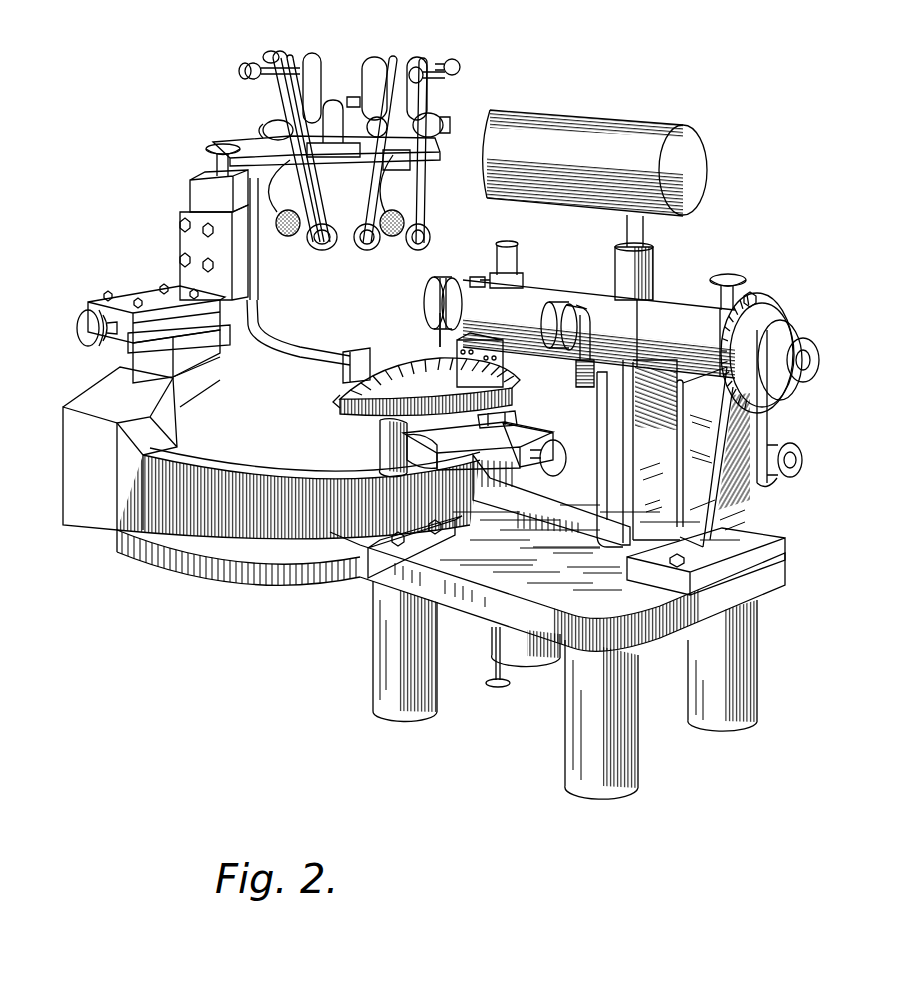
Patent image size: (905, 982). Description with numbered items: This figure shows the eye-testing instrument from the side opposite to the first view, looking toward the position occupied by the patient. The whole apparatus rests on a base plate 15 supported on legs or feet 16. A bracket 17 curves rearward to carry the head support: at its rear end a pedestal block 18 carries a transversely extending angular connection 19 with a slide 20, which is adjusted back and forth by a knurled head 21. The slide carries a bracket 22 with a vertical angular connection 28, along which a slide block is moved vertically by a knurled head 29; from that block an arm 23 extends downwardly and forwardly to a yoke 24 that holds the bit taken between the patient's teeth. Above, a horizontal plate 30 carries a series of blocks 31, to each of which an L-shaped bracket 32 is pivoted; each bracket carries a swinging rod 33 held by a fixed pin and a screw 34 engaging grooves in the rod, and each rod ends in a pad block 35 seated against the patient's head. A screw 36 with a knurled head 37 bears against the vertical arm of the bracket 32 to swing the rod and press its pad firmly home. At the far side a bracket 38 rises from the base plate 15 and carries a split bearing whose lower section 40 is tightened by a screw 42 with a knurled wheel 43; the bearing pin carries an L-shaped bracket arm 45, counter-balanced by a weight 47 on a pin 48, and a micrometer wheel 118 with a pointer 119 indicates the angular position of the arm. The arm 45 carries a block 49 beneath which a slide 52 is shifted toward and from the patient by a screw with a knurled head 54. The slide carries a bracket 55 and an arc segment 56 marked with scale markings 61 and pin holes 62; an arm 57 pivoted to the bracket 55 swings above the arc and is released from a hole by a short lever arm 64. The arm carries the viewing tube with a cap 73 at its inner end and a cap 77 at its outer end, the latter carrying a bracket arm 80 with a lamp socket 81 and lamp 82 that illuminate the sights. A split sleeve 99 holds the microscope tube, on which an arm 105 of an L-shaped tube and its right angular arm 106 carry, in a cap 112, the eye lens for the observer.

The base plate 15 is at (537, 593).
The legs or feet 16 is at (375, 685).
The bracket 17 is at (243, 525).
The pedestal block 18 is at (183, 350).
The angular connection 19 is at (173, 327).
The slide 20 is at (150, 325).
The knurled head 21 is at (87, 337).
The bracket 22 is at (193, 243).
The arm 23 is at (297, 350).
The yoke 24 is at (350, 367).
The vertical angular connection 28 is at (217, 180).
The knurled head 29 is at (213, 147).
The horizontal plate 30 is at (367, 147).
The block 31 is at (347, 70).
The L-shaped bracket 32 is at (307, 53).
The swinging rod 33 is at (280, 87).
The screw 34 is at (273, 130).
The pad block 35 is at (413, 243).
The screw 36 is at (288, 52).
The knurled head 37 is at (243, 68).
The bracket 38 is at (690, 503).
The lower bearing section 40 is at (637, 338).
The tightening screw 42 is at (747, 283).
The knurled wheel 43 is at (723, 273).
The L-shaped bracket arm 45 is at (627, 453).
The weight 47 is at (620, 147).
The pin 48 is at (640, 232).
The block 49 is at (367, 570).
The slide 52 is at (493, 440).
The knurled head 54 is at (557, 453).
The bracket 55 is at (393, 443).
The arc segment 56 is at (350, 403).
The arm 57 is at (413, 420).
The scale markings 61 is at (397, 417).
The pin holes 62 is at (417, 370).
The lever arm 64 is at (497, 307).
The cap 73 is at (440, 293).
The cap 77 is at (570, 300).
The bracket arm 80 is at (573, 350).
The lamp socket 81 is at (586, 389).
The lamp 82 is at (600, 293).
The split sleeve 99 is at (470, 277).
The arm of L-shaped tube 105 is at (490, 260).
The right angular arm 106 is at (515, 268).
The cap 112 is at (507, 243).
The micrometer wheel 118 is at (773, 320).
The pointer 119 is at (756, 300).